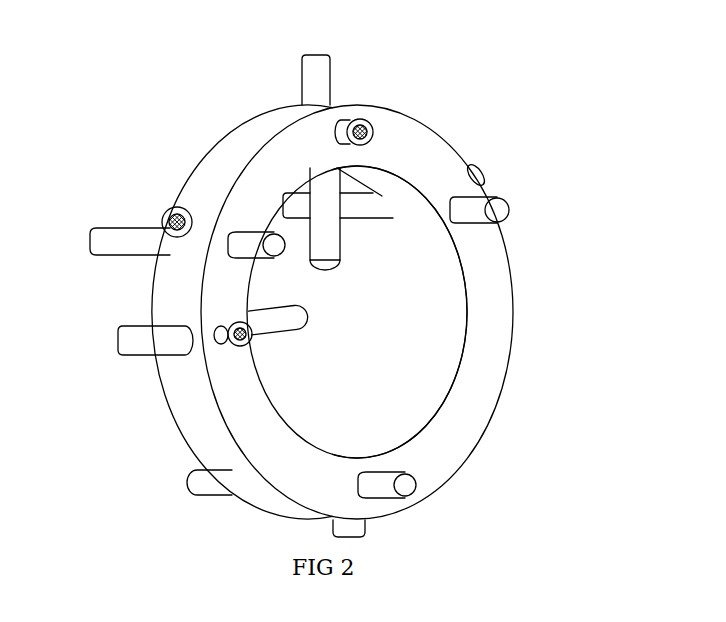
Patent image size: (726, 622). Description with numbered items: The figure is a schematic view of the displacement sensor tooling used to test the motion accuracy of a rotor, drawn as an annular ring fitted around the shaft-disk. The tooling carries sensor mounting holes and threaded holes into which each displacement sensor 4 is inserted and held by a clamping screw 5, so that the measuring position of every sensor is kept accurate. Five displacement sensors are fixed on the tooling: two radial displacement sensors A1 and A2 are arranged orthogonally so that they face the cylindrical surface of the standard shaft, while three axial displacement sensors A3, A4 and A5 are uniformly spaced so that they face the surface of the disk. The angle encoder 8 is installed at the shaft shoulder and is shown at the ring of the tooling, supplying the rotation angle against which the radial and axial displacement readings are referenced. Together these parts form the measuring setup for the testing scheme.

The displacement sensor 4 is at (338, 74).
The clamping screw 5 is at (373, 128).
The angle encoder 8 is at (520, 302).
The radial displacement sensor A1 is at (351, 228).
The radial displacement sensor A2 is at (280, 327).
The axial displacement sensor A3 is at (184, 483).
The axial displacement sensor A4 is at (115, 238).
The axial displacement sensor A5 is at (273, 199).